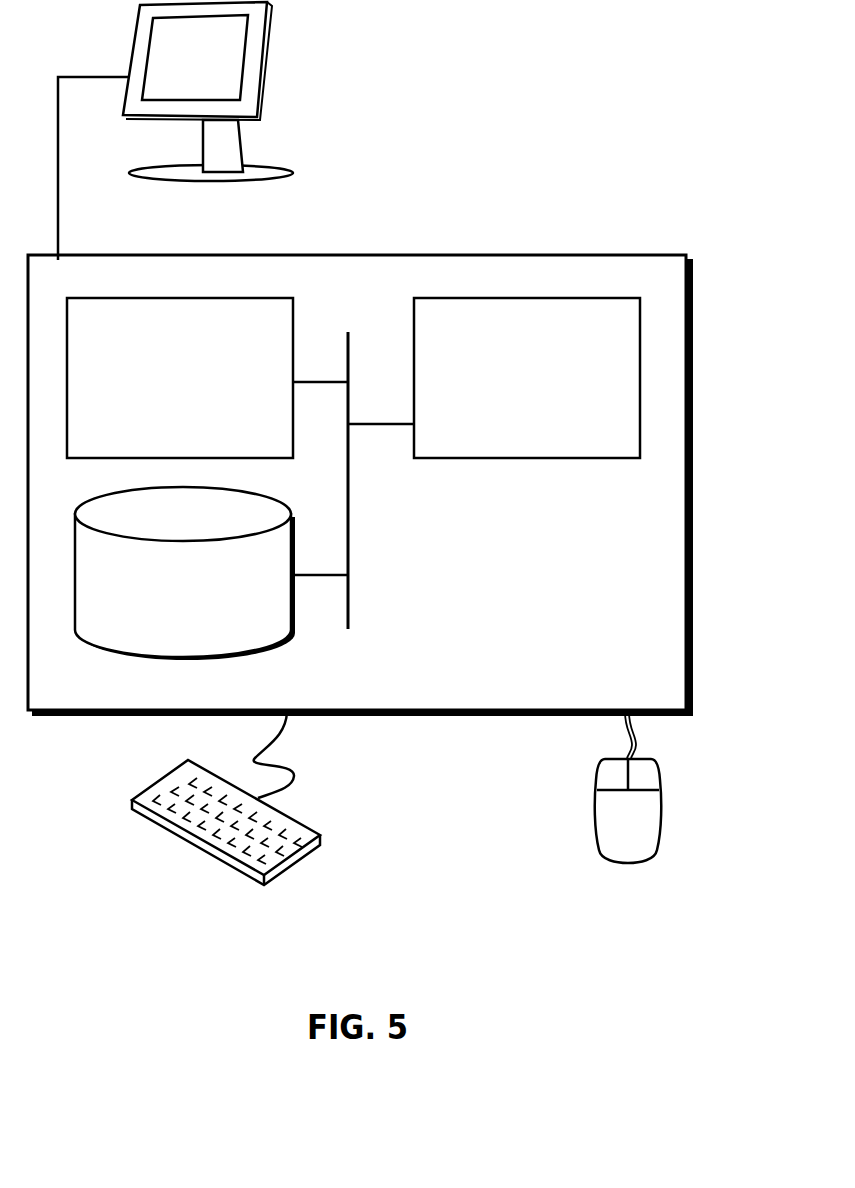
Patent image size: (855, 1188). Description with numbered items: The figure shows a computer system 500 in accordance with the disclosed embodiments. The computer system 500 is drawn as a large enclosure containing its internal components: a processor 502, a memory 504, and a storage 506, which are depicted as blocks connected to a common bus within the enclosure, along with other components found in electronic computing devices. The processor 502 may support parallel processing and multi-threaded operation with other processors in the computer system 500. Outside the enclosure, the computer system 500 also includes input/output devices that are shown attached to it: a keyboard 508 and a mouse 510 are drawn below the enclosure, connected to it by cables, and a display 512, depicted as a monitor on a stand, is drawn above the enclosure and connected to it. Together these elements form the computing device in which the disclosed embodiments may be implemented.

The computer system 500 is at (403, 235).
The processor 502 is at (551, 389).
The memory 504 is at (202, 389).
The storage 506 is at (208, 601).
The keyboard 508 is at (150, 822).
The mouse 510 is at (648, 832).
The display 512 is at (175, 131).